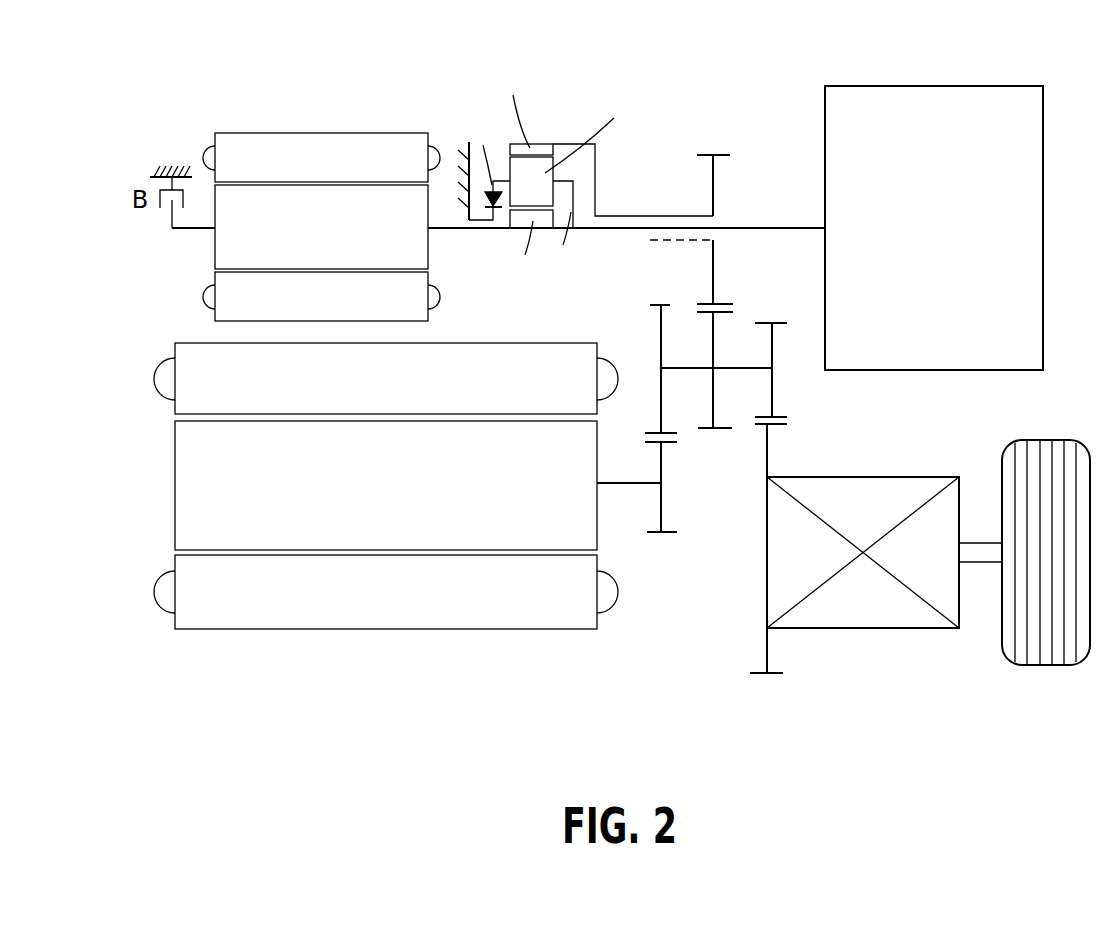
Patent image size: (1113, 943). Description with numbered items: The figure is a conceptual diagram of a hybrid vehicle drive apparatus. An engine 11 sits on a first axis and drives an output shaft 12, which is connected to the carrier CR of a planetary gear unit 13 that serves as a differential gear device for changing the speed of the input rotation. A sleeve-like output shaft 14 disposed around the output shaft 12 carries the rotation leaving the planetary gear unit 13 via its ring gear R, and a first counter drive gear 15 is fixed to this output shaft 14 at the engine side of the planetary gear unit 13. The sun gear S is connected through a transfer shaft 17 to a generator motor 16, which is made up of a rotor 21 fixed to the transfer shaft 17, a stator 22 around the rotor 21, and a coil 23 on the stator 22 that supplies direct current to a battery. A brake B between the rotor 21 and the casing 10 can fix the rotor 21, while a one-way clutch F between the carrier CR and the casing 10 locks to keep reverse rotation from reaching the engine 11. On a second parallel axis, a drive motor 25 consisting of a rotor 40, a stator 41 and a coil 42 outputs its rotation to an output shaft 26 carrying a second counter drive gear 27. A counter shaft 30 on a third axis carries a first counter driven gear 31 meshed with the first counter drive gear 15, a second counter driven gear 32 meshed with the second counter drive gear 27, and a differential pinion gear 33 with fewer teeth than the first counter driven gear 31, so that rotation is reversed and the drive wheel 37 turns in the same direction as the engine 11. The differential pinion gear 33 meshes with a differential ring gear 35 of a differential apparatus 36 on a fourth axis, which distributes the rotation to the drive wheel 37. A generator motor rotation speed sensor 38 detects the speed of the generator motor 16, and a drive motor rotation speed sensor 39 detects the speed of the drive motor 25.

The casing 10 is at (152, 168).
The engine 11 is at (912, 85).
The output shaft 12 is at (758, 228).
The planetary gear unit 13 is at (563, 118).
The output shaft 14 is at (630, 216).
The first counter drive gear 15 is at (718, 155).
The generator motor 16 is at (293, 181).
The transfer shaft 17 is at (477, 222).
The rotor 21 is at (215, 240).
The stator 22 is at (237, 133).
The coil 23 is at (205, 150).
The drive motor 25 is at (350, 502).
The output shaft 26 is at (612, 485).
The second counter drive gear 27 is at (655, 535).
The counter shaft 30 is at (682, 368).
The first counter driven gear 31 is at (705, 431).
The second counter driven gear 32 is at (650, 305).
The differential pinion gear 33 is at (760, 321).
The differential ring gear 35 is at (785, 422).
The differential apparatus 36 is at (883, 463).
The drive wheel 37 is at (1055, 440).
The generator motor rotation speed sensor 38 is at (440, 252).
The drive motor rotation speed sensor 39 is at (625, 468).
The rotor 40 is at (190, 491).
The stator 41 is at (188, 350).
The coil 42 is at (155, 380).